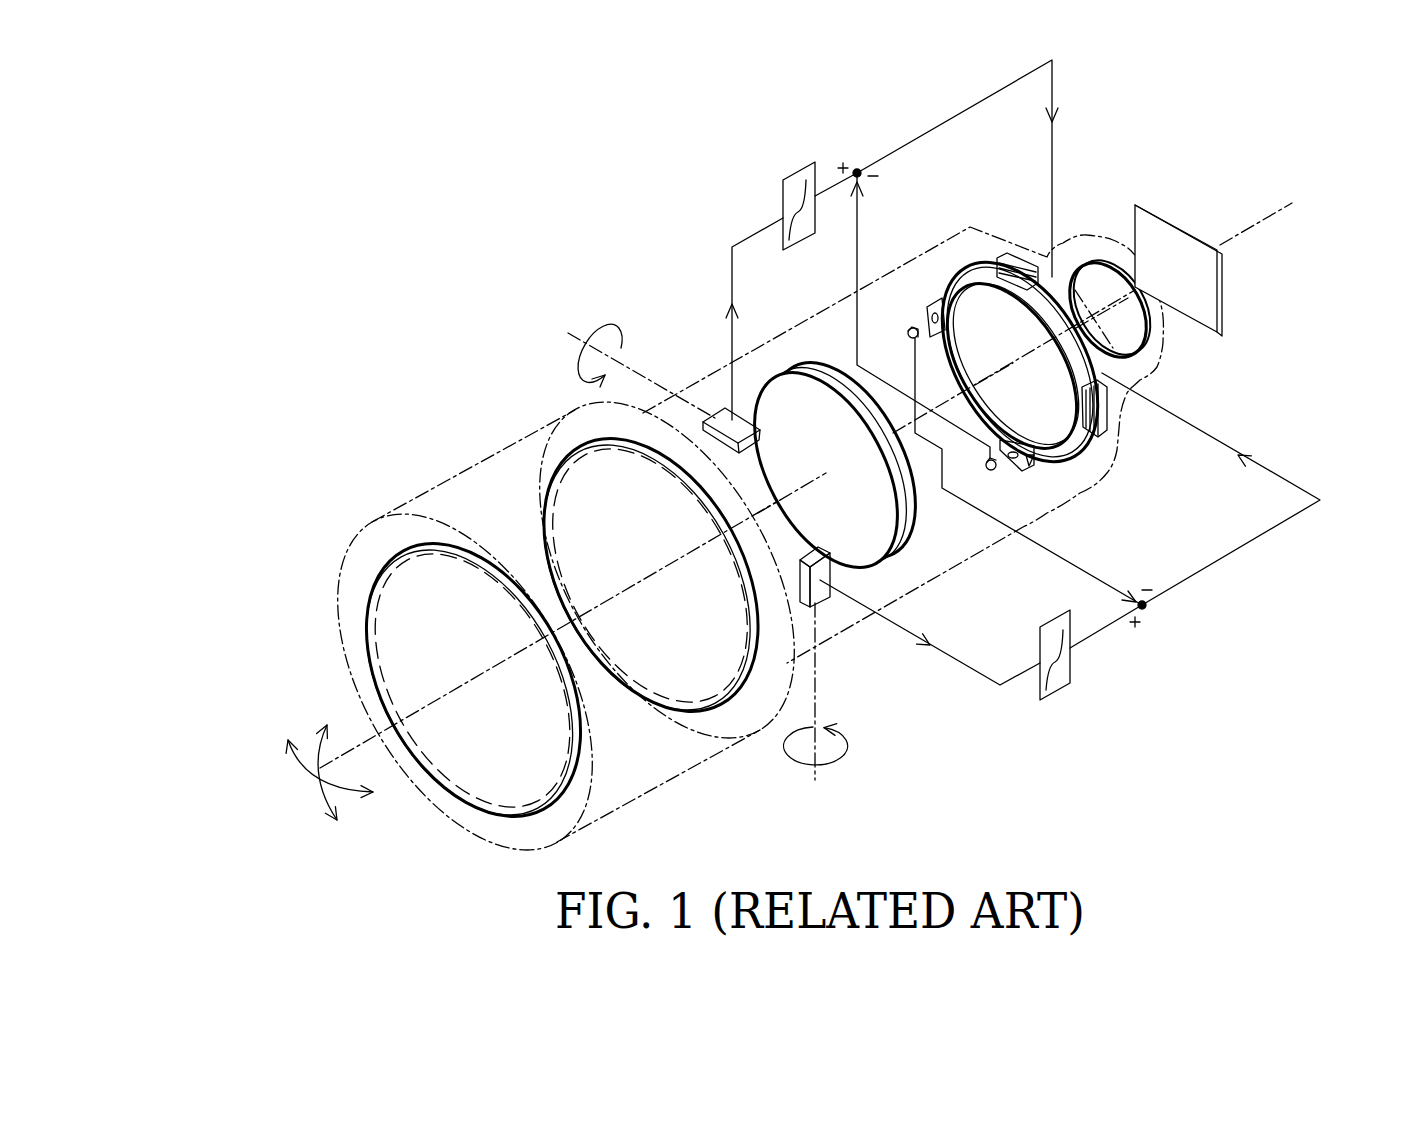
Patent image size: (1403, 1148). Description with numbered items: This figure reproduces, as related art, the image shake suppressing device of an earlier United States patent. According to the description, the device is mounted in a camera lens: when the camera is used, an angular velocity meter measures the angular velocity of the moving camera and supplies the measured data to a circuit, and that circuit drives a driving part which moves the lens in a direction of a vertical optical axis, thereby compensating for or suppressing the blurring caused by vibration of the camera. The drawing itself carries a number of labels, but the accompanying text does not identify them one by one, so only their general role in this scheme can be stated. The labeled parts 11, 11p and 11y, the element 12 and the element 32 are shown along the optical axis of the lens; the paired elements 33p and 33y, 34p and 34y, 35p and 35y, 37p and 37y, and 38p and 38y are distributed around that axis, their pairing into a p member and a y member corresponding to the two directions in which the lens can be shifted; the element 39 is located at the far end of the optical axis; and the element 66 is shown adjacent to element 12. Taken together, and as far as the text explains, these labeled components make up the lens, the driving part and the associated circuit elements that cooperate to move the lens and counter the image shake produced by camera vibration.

The lens group 11 is at (327, 817).
The pitch direction of lens group 11p is at (325, 722).
The yaw direction of lens group 11y is at (370, 793).
The correction lens 12 is at (975, 297).
The lens barrel housing 32 is at (685, 772).
The pitch magnet 33p is at (722, 420).
The yaw magnet 33y is at (823, 607).
The pitch rotation 34p is at (600, 325).
The yaw rotation 34y is at (840, 757).
The pitch position sensor 35p is at (802, 167).
The yaw position sensor 35y is at (1048, 700).
The pitch coil 37p is at (1008, 257).
The yaw coil 37y is at (1103, 410).
The pitch terminal tab 38p is at (1008, 468).
The yaw terminal tab 38y is at (928, 300).
The image sensor 39 is at (1170, 225).
The lens holder frame 66 is at (980, 417).